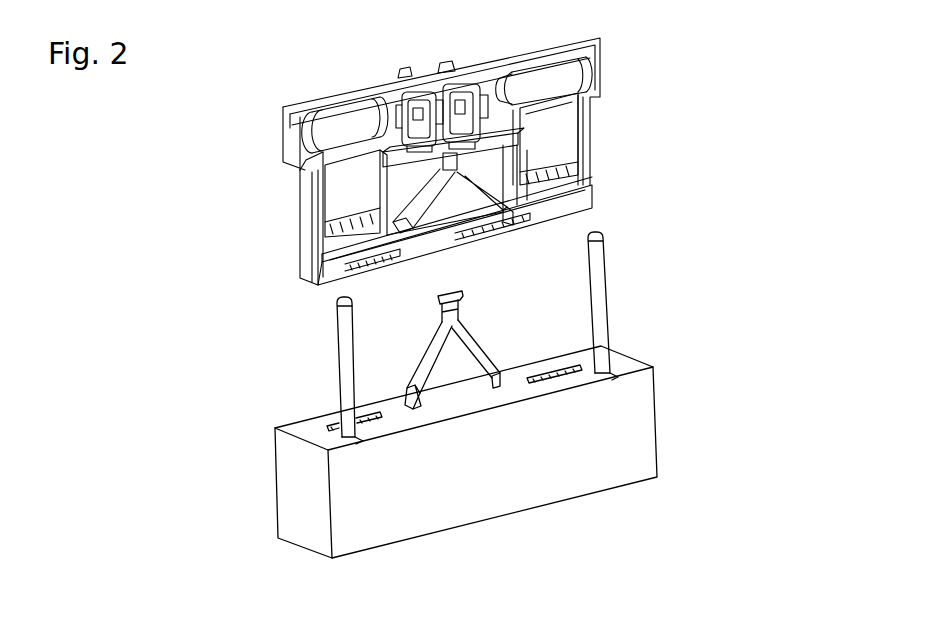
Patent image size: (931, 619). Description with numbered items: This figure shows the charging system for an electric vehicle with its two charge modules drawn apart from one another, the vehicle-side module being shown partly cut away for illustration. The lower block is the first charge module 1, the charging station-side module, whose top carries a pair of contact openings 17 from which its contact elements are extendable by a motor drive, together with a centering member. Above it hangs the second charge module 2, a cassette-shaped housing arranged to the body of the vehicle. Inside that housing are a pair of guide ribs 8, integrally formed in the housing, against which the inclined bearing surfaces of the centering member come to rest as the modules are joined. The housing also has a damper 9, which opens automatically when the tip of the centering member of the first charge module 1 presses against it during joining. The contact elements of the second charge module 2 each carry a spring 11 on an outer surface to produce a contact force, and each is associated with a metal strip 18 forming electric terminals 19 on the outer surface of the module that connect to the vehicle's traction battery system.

The first charge module 1 is at (300, 473).
The second charge module 2 is at (441, 161).
The guide ribs 8 is at (470, 187).
The damper 9 is at (468, 240).
The spring 11 is at (535, 131).
The contact openings 17 is at (333, 422).
The metal strip 18 is at (401, 118).
The electric terminals 19 is at (446, 61).